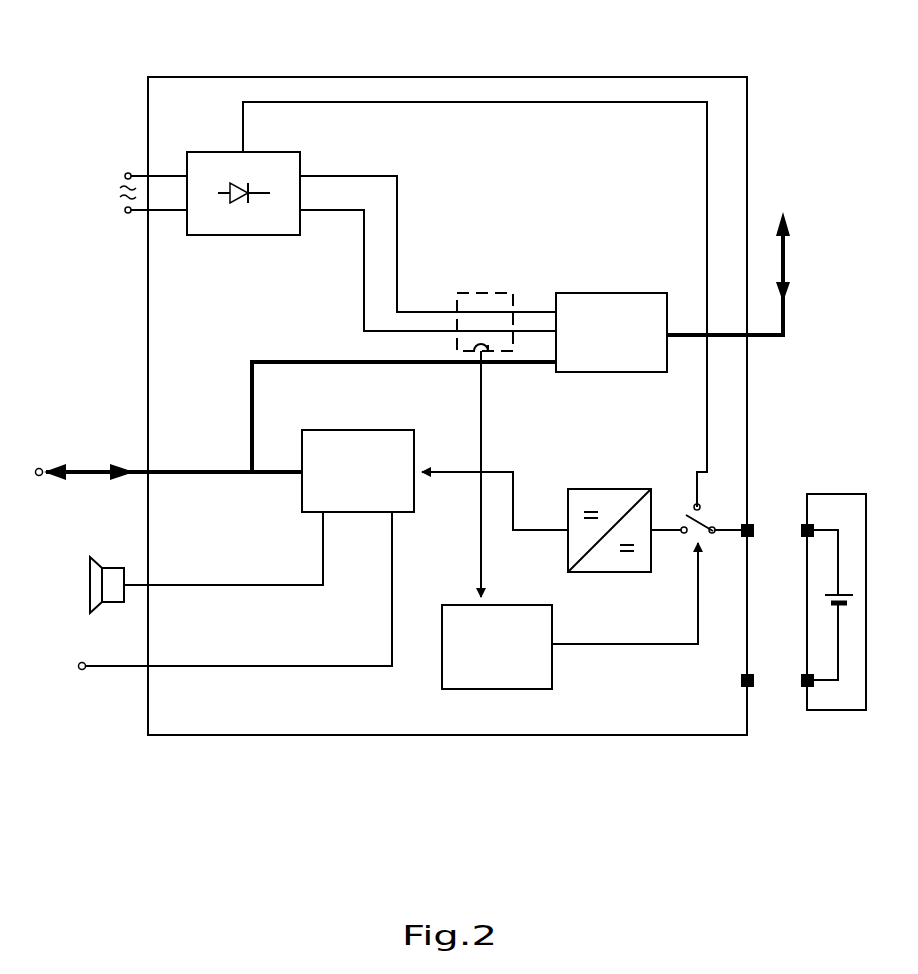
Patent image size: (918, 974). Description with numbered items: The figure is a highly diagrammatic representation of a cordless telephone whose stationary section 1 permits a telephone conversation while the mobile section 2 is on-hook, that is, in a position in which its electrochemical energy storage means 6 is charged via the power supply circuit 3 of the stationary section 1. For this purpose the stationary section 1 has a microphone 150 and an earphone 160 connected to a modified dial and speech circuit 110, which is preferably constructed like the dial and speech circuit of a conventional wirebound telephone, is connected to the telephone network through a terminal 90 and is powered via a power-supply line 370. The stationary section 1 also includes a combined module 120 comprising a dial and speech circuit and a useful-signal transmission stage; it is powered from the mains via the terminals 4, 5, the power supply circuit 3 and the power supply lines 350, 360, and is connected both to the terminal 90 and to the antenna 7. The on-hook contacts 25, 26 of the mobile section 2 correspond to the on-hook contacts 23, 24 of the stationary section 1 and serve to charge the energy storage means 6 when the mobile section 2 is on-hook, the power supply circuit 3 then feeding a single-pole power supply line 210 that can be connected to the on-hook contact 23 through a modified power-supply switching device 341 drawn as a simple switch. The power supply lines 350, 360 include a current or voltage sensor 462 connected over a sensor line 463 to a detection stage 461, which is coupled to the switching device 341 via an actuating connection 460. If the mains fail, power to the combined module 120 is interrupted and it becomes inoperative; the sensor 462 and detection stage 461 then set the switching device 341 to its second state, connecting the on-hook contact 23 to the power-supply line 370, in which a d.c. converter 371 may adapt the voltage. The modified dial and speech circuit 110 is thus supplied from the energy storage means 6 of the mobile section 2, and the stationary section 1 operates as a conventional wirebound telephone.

The stationary section 1 is at (466, 76).
The mobile section 2 is at (840, 712).
The power supply circuit 3 is at (258, 237).
The terminal 4 is at (126, 171).
The terminal 5 is at (126, 213).
The electrochemical energy storage means 6 is at (832, 601).
The antenna 7 is at (786, 268).
The on-hook contact 23 is at (752, 535).
The on-hook contact 24 is at (745, 683).
The on-hook contact 25 is at (800, 527).
The on-hook contact 26 is at (802, 688).
The terminal 90 is at (42, 478).
The modified dial and speech circuit 110 is at (325, 428).
The combined module 120 is at (585, 290).
The microphone 150 is at (78, 669).
The earphone 160 is at (90, 578).
The power supply line 210 is at (575, 102).
The modified power-supply switching device 341 is at (690, 536).
The power supply line 350 is at (398, 242).
The power supply line 360 is at (362, 250).
The power-supply line 370 is at (516, 492).
The d.c. converter 371 is at (598, 487).
The actuating connection 460 is at (607, 645).
The detection stage 461 is at (525, 690).
The current or voltage sensor 462 is at (470, 290).
The sensor line 463 is at (475, 517).